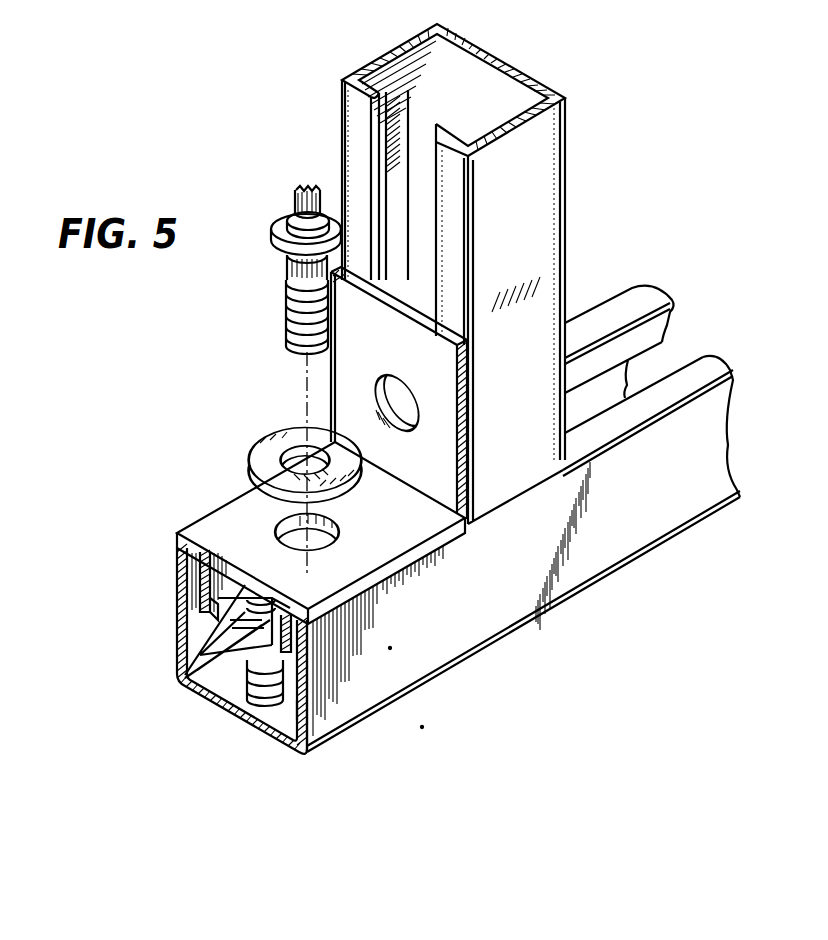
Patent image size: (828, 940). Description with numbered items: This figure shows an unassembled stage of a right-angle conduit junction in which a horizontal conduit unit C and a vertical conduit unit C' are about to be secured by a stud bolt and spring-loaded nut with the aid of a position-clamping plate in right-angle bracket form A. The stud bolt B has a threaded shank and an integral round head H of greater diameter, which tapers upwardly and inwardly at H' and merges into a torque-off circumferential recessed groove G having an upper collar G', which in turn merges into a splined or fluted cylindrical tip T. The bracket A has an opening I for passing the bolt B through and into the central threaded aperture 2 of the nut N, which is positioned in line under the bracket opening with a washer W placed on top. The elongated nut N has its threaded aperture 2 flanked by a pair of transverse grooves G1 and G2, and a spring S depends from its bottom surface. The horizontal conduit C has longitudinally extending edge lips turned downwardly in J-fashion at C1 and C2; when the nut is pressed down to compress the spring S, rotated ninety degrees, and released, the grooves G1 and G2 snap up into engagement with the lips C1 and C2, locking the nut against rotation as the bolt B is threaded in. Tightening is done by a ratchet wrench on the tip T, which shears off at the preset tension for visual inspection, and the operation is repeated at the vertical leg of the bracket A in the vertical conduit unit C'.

The splined cylindrical tip T is at (306, 188).
The upper collar G' is at (292, 191).
The torque-off circumferential recessed groove G is at (285, 208).
The tapering portion of head H' is at (290, 224).
The round head H is at (282, 249).
The stud bolt B is at (287, 272).
The washer W is at (264, 437).
The right-angle bracket A is at (238, 520).
The hole in bracket I is at (337, 535).
The vertical conduit unit C' is at (485, 274).
The horizontal conduit unit C is at (458, 520).
The conduit lip C2 is at (202, 590).
The transverse groove G2 is at (215, 612).
The nut N is at (192, 684).
The central threaded aperture 2 is at (250, 614).
The spring S is at (267, 700).
The conduit lip C1 is at (293, 648).
The transverse groove G1 is at (312, 708).